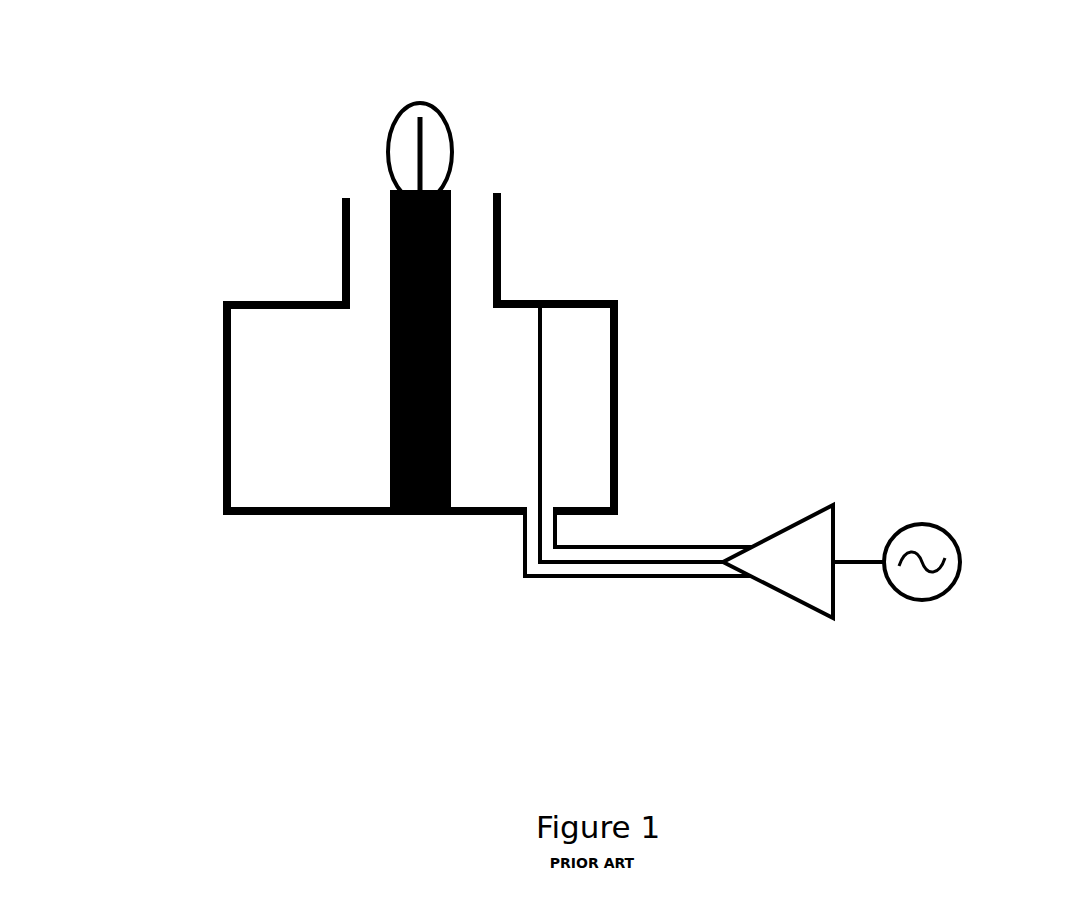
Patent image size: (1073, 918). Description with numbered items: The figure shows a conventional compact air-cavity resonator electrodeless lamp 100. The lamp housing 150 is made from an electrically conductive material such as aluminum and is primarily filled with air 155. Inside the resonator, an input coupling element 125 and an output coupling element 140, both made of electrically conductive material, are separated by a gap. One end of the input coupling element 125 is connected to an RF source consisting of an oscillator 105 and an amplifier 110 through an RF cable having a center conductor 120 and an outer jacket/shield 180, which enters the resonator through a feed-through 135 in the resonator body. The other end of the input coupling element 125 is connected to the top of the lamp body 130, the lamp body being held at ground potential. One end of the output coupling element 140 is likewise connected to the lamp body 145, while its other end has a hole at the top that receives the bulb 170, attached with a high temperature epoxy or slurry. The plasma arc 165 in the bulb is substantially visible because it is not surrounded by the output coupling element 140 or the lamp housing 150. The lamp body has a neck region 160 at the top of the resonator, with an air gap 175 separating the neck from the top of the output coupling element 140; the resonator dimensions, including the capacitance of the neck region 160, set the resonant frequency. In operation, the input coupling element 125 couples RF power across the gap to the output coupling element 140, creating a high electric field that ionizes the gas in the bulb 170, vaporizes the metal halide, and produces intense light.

The compact air-cavity resonator electrodeless lamp 100 is at (328, 128).
The oscillator 105 is at (942, 598).
The amplifier 110 is at (772, 590).
The center conductor 120 is at (633, 562).
The input coupling element 125 is at (541, 372).
The lamp body 130 is at (540, 304).
The feed-through 135 is at (532, 515).
The output coupling element 140 is at (390, 478).
The lamp body 145 is at (424, 515).
The lamp housing 150 is at (617, 333).
The air 155 is at (283, 433).
The neck region 160 is at (342, 263).
The plasma arc 165 is at (423, 148).
The bulb 170 is at (435, 109).
The air gap 175 is at (367, 217).
The outer jacket/shield 180 is at (608, 580).